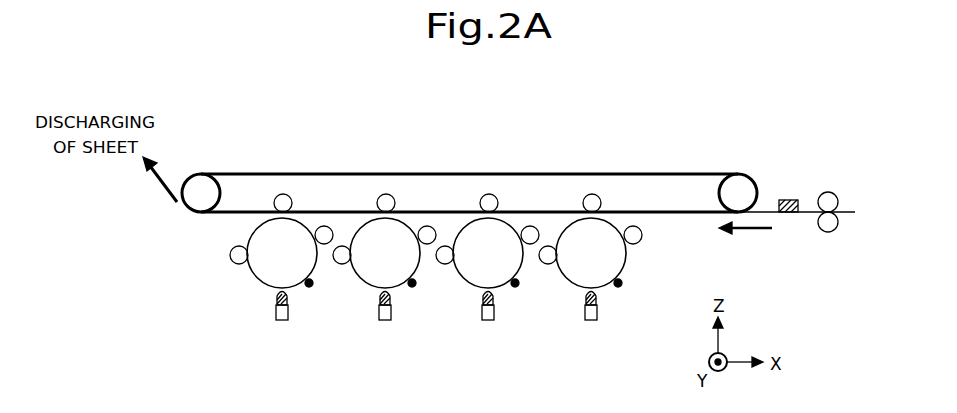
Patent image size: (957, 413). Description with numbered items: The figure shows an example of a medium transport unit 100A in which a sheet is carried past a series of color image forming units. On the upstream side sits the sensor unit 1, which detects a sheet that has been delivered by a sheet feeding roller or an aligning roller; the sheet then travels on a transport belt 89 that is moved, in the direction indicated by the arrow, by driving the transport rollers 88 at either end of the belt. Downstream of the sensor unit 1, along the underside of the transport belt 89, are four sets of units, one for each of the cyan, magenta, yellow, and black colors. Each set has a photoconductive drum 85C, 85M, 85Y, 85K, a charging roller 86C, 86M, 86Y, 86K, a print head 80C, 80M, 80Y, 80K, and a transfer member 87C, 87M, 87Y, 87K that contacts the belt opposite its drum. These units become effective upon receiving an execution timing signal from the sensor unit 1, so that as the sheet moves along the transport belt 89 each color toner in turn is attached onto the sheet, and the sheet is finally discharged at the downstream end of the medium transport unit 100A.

The medium transport unit 100A is at (788, 80).
The sensor unit 1 is at (789, 200).
The transport rollers 88 is at (196, 180).
The transport belt 89 is at (692, 215).
The print head 80C is at (289, 312).
The photoconductive drum 85C is at (267, 278).
The charging roller 86C is at (312, 284).
The transfer member 87C is at (289, 208).
The print head 80M is at (392, 312).
The photoconductive drum 85M is at (370, 278).
The charging roller 86M is at (415, 284).
The transfer member 87M is at (392, 208).
The print head 80Y is at (495, 312).
The photoconductive drum 85Y is at (473, 278).
The charging roller 86Y is at (518, 284).
The transfer member 87Y is at (495, 208).
The print head 80K is at (598, 312).
The photoconductive drum 85K is at (576, 278).
The charging roller 86K is at (621, 284).
The transfer member 87K is at (598, 208).